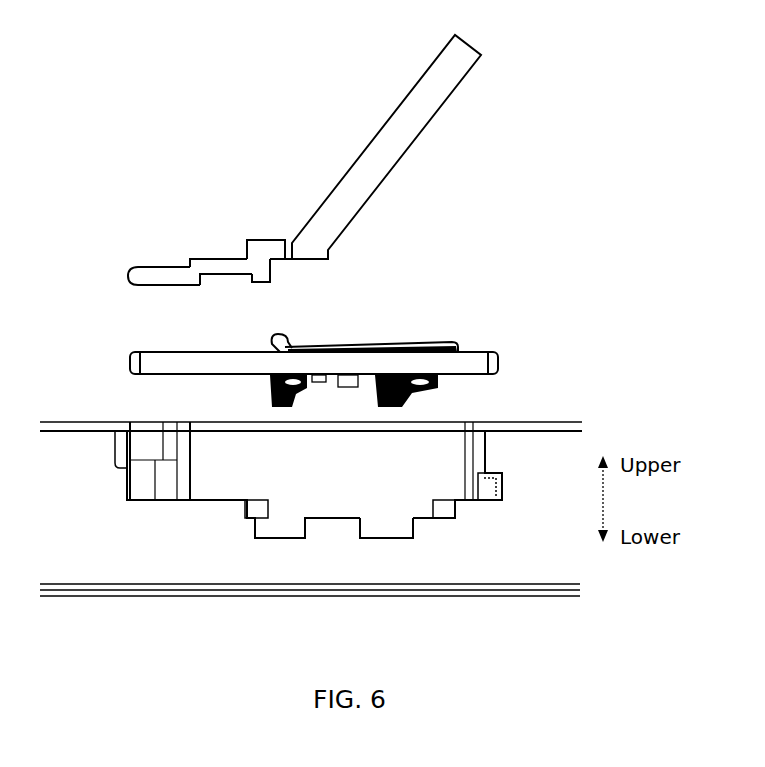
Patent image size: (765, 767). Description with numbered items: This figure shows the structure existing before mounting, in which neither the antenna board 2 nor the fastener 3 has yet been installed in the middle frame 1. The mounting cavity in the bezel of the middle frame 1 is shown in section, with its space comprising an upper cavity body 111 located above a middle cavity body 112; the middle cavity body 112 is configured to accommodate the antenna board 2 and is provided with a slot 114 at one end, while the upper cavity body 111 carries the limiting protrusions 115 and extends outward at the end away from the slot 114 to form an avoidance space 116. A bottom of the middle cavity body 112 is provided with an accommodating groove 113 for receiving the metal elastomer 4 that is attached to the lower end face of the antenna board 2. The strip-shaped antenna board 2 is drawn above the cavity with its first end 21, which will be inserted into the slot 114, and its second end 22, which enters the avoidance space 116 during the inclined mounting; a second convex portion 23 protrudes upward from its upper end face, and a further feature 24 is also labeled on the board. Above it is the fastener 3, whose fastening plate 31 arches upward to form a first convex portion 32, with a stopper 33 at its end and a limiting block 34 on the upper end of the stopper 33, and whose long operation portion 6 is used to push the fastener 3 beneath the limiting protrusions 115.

The middle frame 1 is at (540, 570).
The antenna board 2 is at (308, 348).
The fastener 3 is at (294, 177).
The metal elastomer 4 is at (415, 388).
The operation portion 6 is at (392, 118).
The first end 21 is at (475, 360).
The second end 22 is at (140, 355).
The second convex portion 23 is at (280, 334).
The pressing portion 24 is at (385, 344).
The fastening plate 31 is at (158, 268).
The first convex portion 32 is at (208, 262).
The stopper 33 is at (256, 287).
The limiting block 34 is at (272, 240).
The upper cavity body 111 is at (292, 430).
The middle cavity body 112 is at (228, 485).
The accommodating groove 113 is at (378, 532).
The slot 114 is at (490, 478).
The limiting protrusion 115 is at (163, 440).
The avoidance space 116 is at (118, 440).